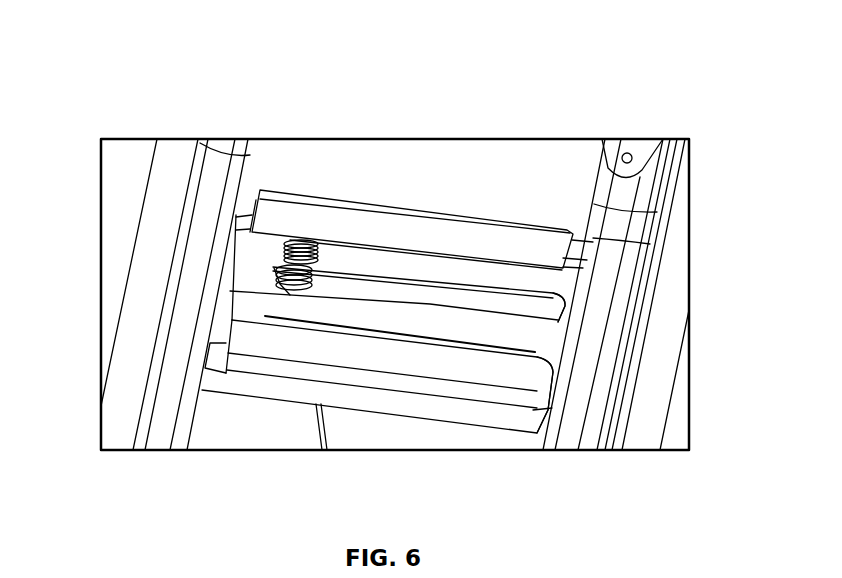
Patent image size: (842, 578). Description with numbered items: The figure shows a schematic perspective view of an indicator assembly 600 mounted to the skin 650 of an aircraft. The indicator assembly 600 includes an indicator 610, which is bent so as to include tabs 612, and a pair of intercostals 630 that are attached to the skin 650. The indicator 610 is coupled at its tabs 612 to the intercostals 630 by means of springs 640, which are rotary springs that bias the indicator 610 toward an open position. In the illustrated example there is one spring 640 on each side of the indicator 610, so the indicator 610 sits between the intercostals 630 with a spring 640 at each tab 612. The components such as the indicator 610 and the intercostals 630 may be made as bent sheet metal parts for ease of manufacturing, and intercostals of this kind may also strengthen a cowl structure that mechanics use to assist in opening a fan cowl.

The indicator assembly 600 is at (535, 78).
The indicator 610 is at (540, 350).
The tabs 612 is at (548, 292).
The intercostals 630 is at (482, 233).
The springs 640 is at (290, 243).
The skin 650 is at (437, 173).